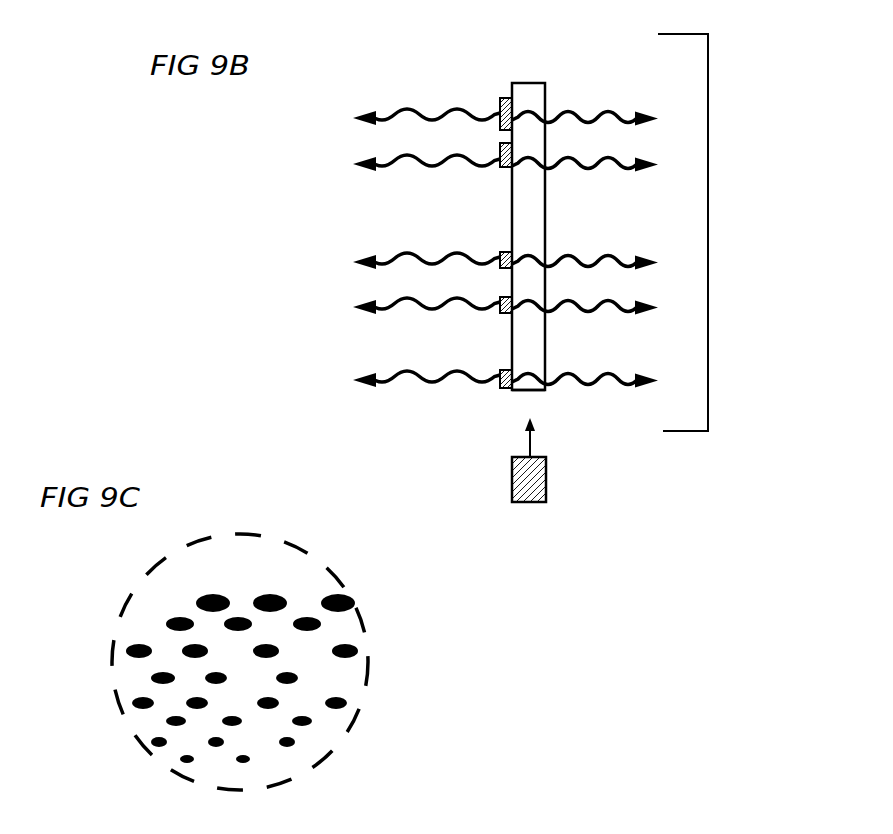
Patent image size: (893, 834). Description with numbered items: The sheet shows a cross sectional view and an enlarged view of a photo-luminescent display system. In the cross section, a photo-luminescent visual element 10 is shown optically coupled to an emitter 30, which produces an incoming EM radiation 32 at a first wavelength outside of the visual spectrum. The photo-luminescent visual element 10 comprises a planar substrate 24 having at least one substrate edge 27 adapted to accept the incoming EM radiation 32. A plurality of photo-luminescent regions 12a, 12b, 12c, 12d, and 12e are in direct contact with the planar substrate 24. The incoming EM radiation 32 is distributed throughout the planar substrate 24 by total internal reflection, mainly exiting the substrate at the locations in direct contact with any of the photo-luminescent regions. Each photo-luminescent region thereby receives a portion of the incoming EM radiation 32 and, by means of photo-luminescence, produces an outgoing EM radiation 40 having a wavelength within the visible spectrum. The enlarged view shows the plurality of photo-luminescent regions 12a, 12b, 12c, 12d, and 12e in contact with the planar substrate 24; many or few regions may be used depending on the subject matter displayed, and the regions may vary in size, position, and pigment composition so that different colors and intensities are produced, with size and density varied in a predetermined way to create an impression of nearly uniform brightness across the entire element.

In FIG. 9B, the photo-luminescent visual element 10 is at (710, 232).
In FIG. 9B, the planar substrate 24 is at (528, 83).
In FIG. 9C, the planar substrate 24 is at (212, 565).
In FIG. 9B, the photo-luminescent region 12a is at (503, 100).
In FIG. 9C, the photo-luminescent region 12a is at (270, 595).
In FIG. 9B, the photo-luminescent region 12b is at (503, 147).
In FIG. 9C, the photo-luminescent region 12b is at (180, 617).
In FIG. 9B, the photo-luminescent region 12c is at (503, 255).
In FIG. 9C, the photo-luminescent region 12c is at (345, 645).
In FIG. 9B, the photo-luminescent region 12d is at (503, 300).
In FIG. 9C, the photo-luminescent region 12d is at (336, 697).
In FIG. 9B, the photo-luminescent region 12e is at (503, 389).
In FIG. 9C, the photo-luminescent region 12e is at (295, 742).
In FIG. 9B, the outgoing EM radiation 40 is at (482, 112).
In FIG. 9B, the substrate edge 27 is at (528, 391).
In FIG. 9B, the incoming EM radiation 32 is at (533, 437).
In FIG. 9B, the emitter 30 is at (546, 480).